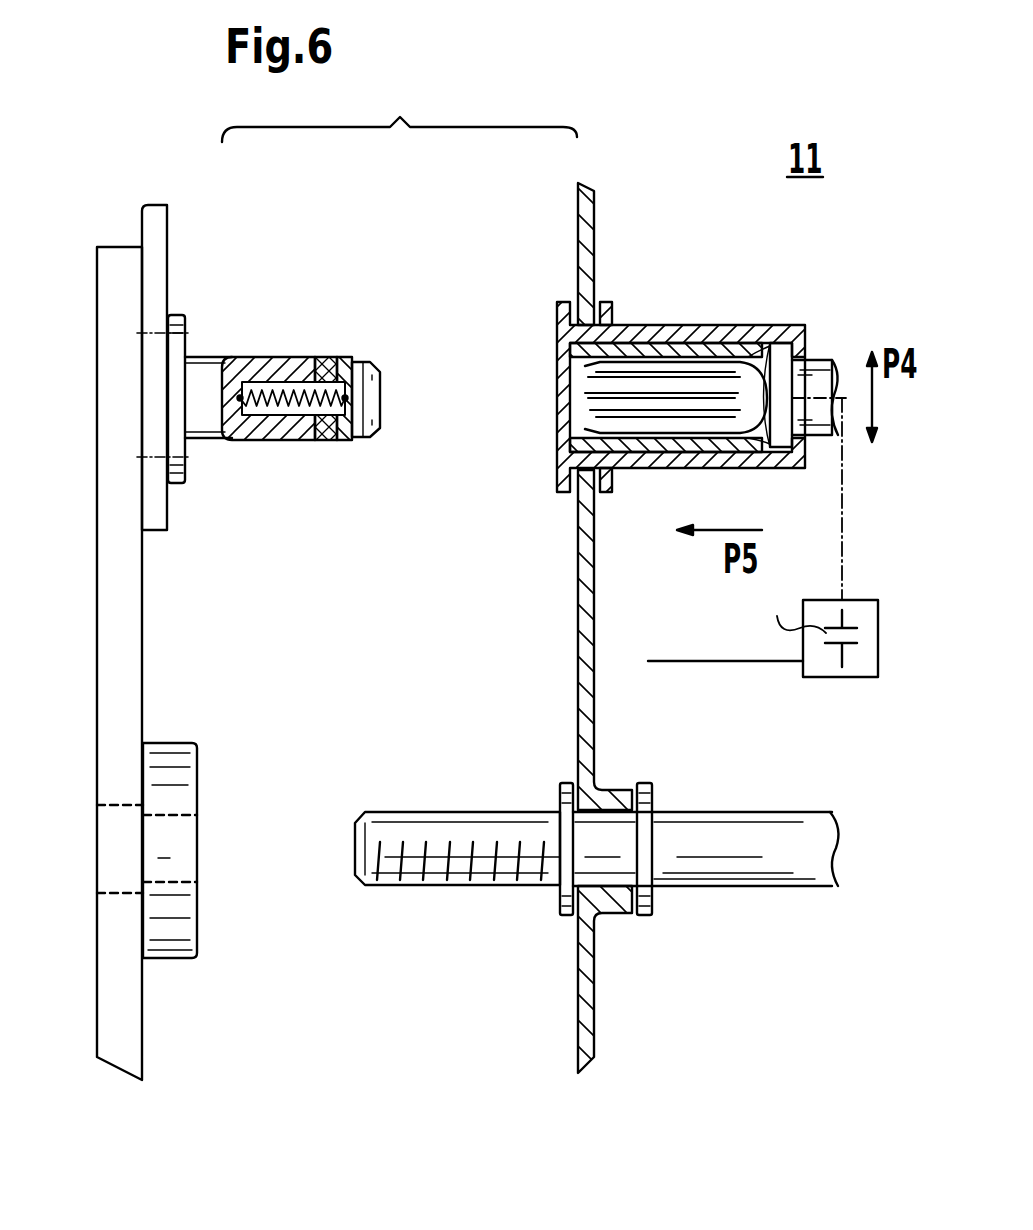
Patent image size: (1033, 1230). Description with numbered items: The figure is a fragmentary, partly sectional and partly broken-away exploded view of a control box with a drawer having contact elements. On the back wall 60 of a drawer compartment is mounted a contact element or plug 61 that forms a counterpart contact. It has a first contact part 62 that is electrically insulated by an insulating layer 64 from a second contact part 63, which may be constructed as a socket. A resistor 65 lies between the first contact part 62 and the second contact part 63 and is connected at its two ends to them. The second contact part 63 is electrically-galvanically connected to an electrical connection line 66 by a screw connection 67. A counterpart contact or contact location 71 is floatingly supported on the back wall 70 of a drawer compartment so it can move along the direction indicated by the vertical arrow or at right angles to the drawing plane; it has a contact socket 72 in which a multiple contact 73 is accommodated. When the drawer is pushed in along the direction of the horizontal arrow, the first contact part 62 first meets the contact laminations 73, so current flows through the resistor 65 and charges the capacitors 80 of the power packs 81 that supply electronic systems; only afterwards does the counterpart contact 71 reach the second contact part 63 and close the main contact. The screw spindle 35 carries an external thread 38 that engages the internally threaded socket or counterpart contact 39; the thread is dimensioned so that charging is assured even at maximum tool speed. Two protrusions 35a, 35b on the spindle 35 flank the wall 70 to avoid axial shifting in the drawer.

The screw spindle 35 is at (782, 837).
The protrusion 35a is at (562, 783).
The protrusion 35b is at (652, 785).
The external thread 38 is at (480, 888).
The socket 39 is at (182, 907).
The back wall 60 is at (125, 286).
The contact element 61 is at (257, 317).
The first contact part 62 is at (360, 360).
The second contact part 63 is at (247, 427).
The insulating layer 64 is at (323, 367).
The resistor 65 is at (290, 413).
The electrical connection line 66 is at (152, 235).
The screw connection 67 is at (187, 333).
The back wall 70 is at (587, 207).
The counterpart contact 71 is at (673, 333).
The contact socket 72 is at (780, 357).
The multiple contact 73 is at (632, 375).
The capacitor 80 is at (790, 609).
The power pack 81 is at (858, 678).